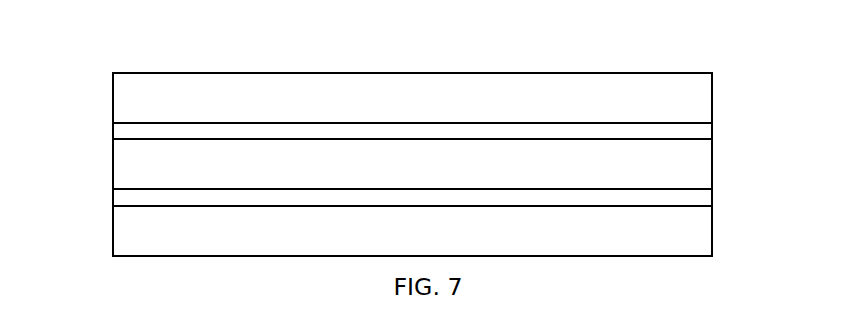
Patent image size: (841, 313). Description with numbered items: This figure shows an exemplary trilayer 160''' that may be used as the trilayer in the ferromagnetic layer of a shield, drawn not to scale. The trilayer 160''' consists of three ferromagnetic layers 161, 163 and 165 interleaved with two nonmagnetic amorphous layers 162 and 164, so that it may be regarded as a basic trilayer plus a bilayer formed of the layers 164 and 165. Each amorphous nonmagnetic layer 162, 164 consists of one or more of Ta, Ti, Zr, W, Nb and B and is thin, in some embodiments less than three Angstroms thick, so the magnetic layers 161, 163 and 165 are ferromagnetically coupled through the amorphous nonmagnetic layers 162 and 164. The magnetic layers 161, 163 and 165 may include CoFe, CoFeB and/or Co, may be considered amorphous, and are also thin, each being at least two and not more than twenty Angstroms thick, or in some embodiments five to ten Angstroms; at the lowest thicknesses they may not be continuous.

The trilayer 160''' is at (412, 141).
The ferromagnetic layer 161 is at (712, 238).
The nonmagnetic amorphous layer 162 is at (113, 198).
The ferromagnetic layer 163 is at (712, 170).
The nonmagnetic amorphous layer 164 is at (113, 131).
The ferromagnetic layer 165 is at (712, 103).